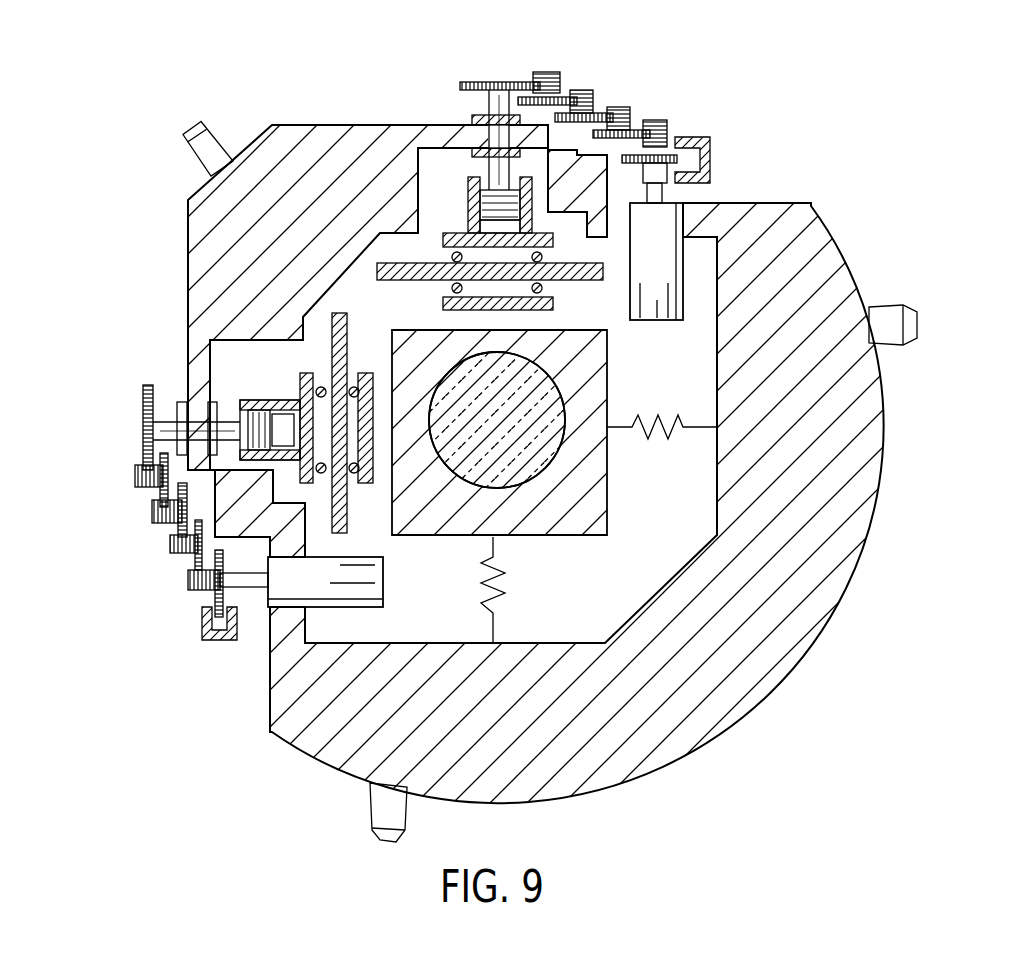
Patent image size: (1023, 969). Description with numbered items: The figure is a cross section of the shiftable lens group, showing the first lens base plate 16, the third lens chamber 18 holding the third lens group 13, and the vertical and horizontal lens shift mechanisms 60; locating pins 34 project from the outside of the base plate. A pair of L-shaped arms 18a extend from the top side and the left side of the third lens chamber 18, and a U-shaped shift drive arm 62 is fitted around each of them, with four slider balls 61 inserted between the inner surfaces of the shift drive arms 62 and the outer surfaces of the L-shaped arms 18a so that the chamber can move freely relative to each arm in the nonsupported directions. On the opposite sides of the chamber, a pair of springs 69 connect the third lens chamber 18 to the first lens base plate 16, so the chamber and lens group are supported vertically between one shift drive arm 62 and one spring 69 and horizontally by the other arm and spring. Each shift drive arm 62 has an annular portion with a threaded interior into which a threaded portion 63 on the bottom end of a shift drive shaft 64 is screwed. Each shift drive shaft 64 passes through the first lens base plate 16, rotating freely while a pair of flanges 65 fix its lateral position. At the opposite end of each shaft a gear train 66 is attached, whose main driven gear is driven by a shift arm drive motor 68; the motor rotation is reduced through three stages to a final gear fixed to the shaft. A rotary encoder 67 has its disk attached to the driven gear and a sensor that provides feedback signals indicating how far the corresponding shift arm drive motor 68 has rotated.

The third lens group 13 is at (533, 470).
The first lens base plate 16 is at (833, 598).
The third lens chamber 18 is at (590, 515).
The L-shaped arms 18a is at (403, 240).
The locating pins 34 is at (196, 130).
The vertical and horizontal lens shift mechanisms 60 is at (373, 65).
The slider balls 61 is at (452, 288).
The shift drive arm 62 is at (452, 224).
The threaded portion 63 is at (518, 200).
The shift drive shaft 64 is at (475, 92).
The flanges 65 is at (478, 152).
The gear train 66 is at (468, 58).
The rotary encoder 67 is at (712, 152).
The shift arm drive motor 68 is at (676, 315).
The springs 69 is at (672, 440).